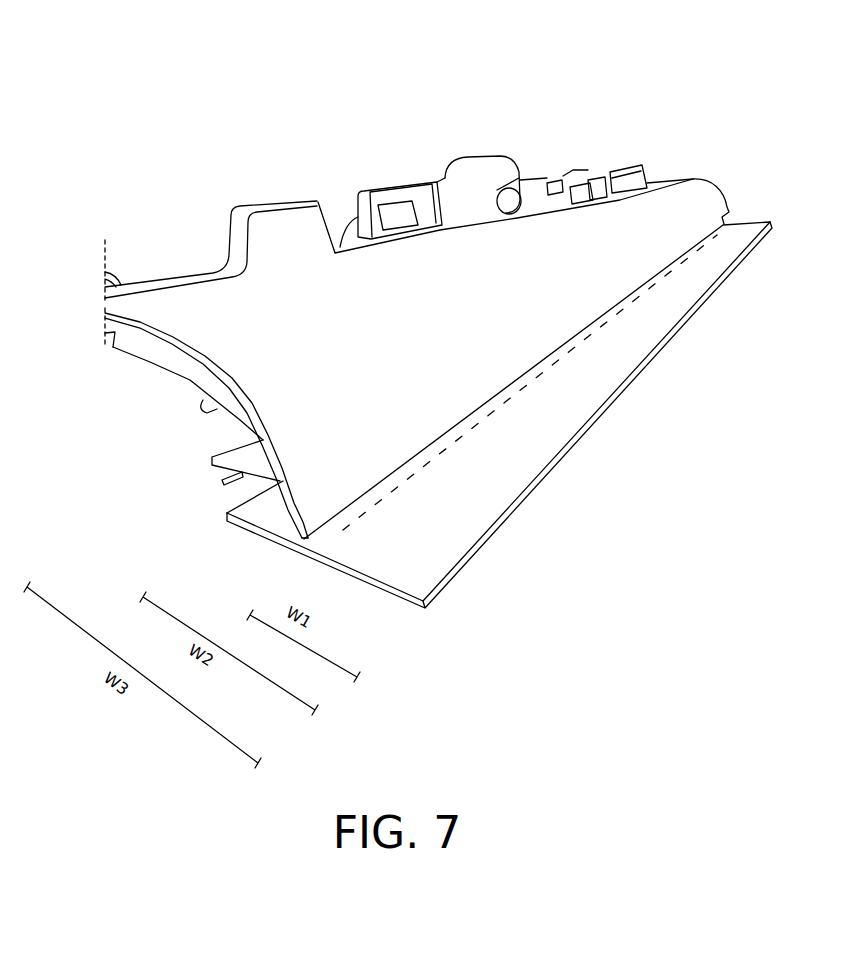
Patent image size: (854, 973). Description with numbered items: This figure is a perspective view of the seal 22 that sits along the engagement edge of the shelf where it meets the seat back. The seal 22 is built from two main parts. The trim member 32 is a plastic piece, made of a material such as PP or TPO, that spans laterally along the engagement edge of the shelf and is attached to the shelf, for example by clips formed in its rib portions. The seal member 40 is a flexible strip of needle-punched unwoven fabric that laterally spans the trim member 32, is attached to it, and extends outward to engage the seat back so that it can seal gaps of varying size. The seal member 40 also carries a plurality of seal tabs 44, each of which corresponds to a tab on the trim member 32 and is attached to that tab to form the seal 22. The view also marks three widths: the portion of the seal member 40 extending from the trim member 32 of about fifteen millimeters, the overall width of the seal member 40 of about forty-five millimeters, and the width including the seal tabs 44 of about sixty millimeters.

The seal 22 is at (731, 128).
The trim member 32 is at (250, 355).
The seal tabs 44 is at (220, 462).
The seal member 40 is at (445, 547).